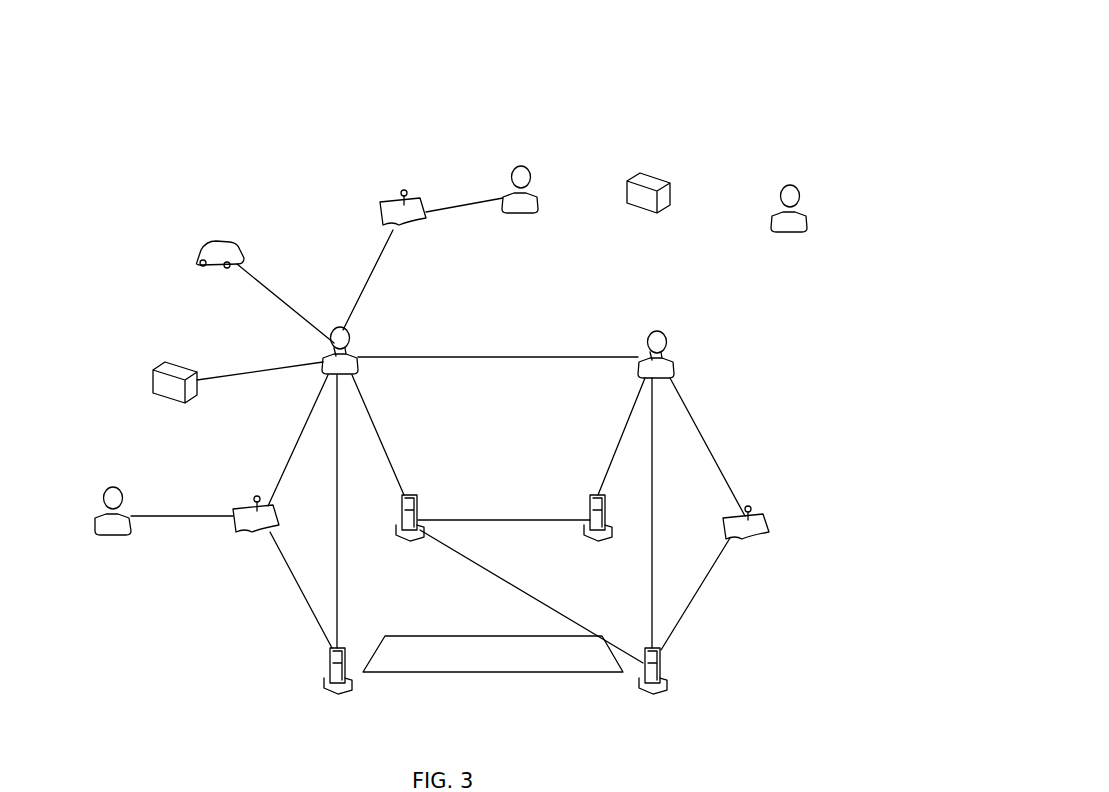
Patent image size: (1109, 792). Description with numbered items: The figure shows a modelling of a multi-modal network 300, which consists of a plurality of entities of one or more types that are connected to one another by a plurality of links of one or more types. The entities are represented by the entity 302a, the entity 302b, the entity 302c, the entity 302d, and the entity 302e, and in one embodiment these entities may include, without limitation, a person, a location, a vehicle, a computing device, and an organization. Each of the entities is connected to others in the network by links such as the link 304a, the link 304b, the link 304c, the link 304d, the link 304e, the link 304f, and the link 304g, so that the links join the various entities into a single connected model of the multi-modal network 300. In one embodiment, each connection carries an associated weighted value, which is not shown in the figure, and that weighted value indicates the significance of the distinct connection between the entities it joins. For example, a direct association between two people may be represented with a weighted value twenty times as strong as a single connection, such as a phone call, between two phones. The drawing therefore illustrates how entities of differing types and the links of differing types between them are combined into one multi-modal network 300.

The multi-modal network 300 is at (798, 68).
The entity 302a is at (525, 166).
The entity 302b is at (666, 668).
The entity 302c is at (769, 522).
The entity 302d is at (200, 242).
The entity 302e is at (660, 177).
The link 304a is at (429, 356).
The link 304b is at (381, 443).
The link 304c is at (505, 521).
The link 304d is at (698, 598).
The link 304e is at (707, 447).
The link 304f is at (259, 283).
The link 304g is at (264, 368).